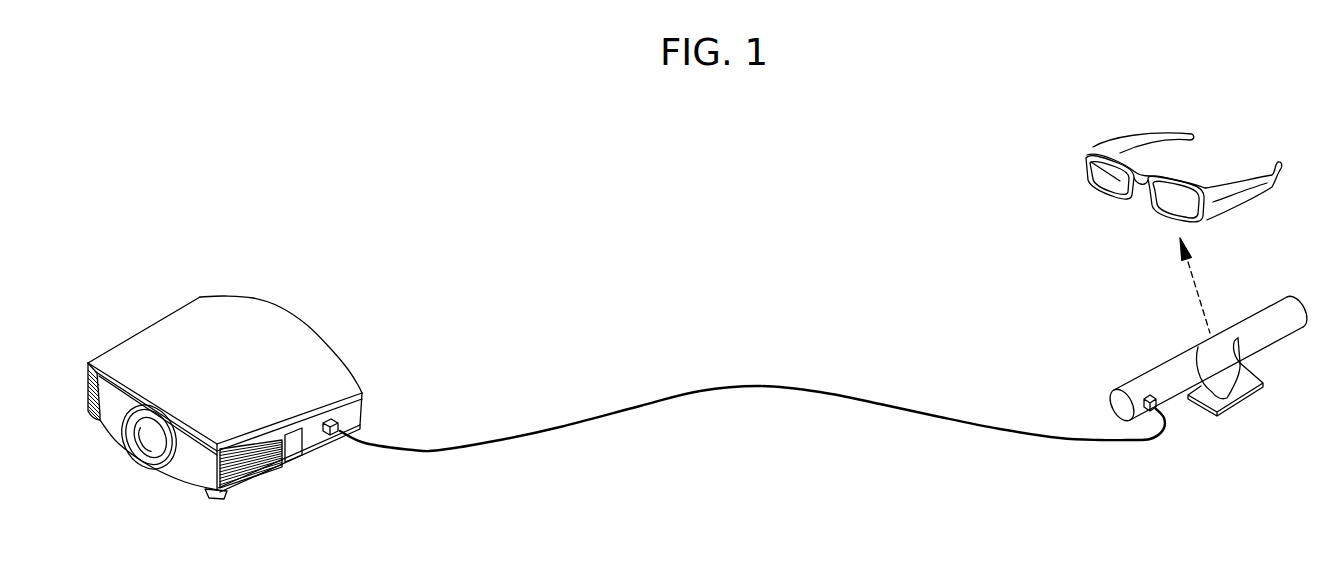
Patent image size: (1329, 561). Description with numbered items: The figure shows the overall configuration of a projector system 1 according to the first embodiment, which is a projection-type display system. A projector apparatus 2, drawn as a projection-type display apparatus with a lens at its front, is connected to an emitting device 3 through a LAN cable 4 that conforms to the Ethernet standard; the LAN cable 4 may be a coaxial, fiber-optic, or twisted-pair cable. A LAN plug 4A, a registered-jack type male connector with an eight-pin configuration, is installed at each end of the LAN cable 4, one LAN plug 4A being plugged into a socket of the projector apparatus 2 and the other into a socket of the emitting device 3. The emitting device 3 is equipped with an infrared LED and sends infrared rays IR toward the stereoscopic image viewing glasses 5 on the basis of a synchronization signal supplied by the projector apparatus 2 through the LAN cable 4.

The projector system 1 is at (404, 179).
The projector apparatus 2 is at (260, 316).
The emitting device 3 is at (1265, 313).
The LAN cable 4 is at (698, 390).
The LAN plug 4A is at (325, 438).
The stereoscopic image viewing glasses 5 is at (1137, 142).
The infrared signal IR is at (1188, 293).